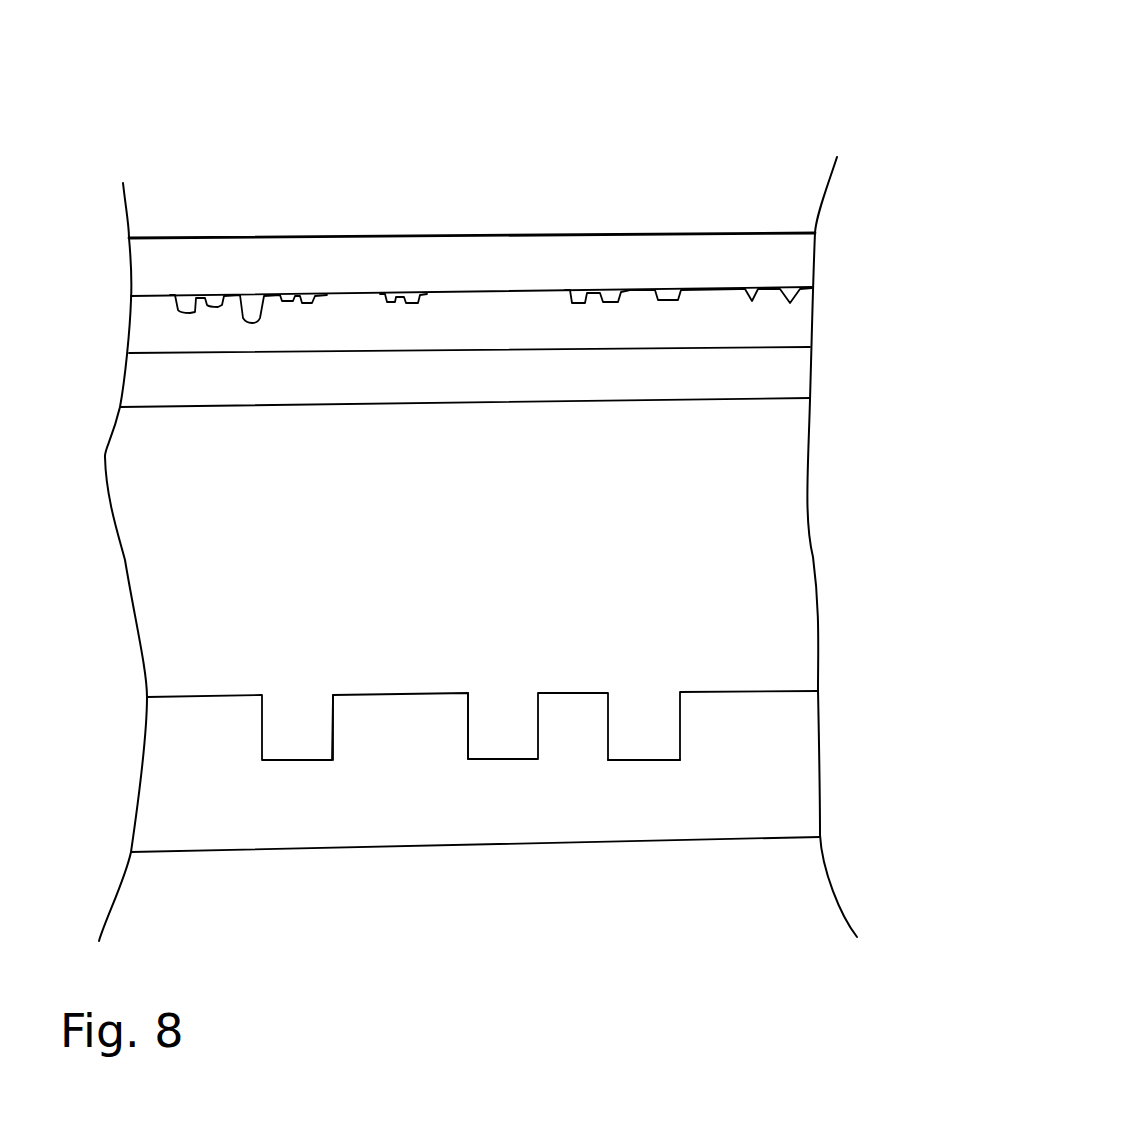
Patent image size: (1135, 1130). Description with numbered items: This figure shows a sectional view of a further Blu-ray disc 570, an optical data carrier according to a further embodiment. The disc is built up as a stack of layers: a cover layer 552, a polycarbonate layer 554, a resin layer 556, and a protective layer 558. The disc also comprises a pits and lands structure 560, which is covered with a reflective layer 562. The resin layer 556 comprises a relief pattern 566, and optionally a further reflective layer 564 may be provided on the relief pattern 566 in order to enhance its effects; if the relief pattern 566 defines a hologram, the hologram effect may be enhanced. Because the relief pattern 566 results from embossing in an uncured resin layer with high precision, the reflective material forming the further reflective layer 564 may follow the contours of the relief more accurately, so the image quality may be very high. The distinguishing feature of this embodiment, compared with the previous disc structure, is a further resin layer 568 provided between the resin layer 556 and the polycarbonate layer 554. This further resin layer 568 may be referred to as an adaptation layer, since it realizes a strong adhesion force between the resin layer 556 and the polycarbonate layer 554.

The Blu-ray disc 570 is at (855, 108).
The protective layer 558 is at (802, 267).
The further reflective layer 564 is at (493, 289).
The relief pattern 566 is at (327, 294).
The resin layer 556 is at (783, 328).
The further resin layer 568 is at (757, 370).
The polycarbonate layer 554 is at (735, 557).
The pits and lands structure 560 is at (466, 733).
The reflective layer 562 is at (623, 762).
The cover layer 552 is at (778, 767).